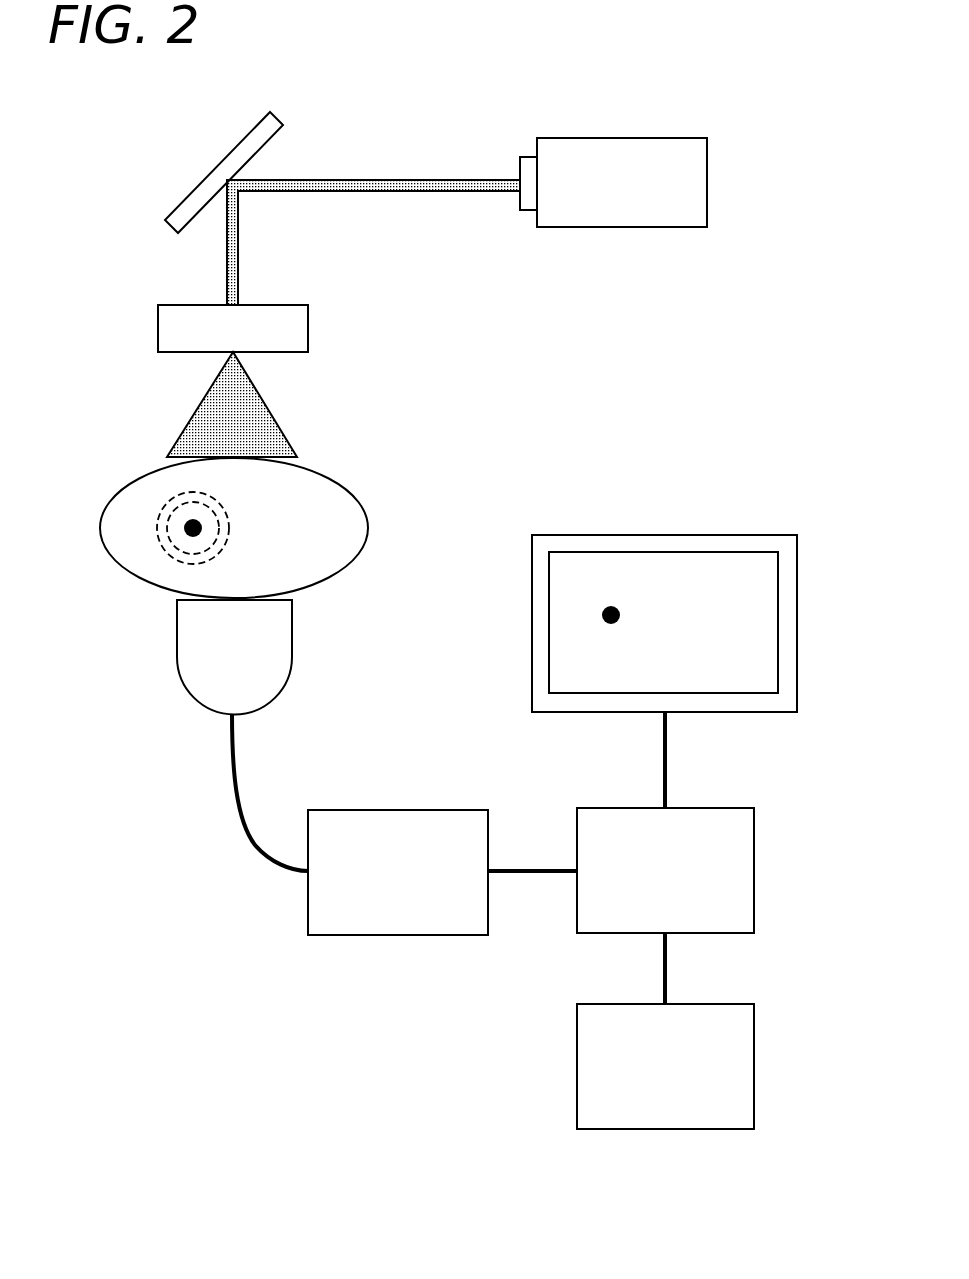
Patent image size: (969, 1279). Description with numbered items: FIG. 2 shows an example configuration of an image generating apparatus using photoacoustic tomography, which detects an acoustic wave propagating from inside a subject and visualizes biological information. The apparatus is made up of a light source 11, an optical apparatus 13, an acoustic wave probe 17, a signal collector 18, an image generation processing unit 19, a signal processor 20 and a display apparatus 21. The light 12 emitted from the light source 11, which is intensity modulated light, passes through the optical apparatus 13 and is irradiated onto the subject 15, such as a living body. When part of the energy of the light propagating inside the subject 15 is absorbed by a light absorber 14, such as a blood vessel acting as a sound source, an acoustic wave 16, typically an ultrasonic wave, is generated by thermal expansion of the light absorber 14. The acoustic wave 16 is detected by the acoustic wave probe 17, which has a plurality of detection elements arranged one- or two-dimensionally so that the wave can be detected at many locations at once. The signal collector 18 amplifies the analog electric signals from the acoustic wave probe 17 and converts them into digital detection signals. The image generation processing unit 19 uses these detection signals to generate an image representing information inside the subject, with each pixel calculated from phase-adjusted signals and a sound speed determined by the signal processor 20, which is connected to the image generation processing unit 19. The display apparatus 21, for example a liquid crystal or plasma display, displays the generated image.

The light source 11 is at (648, 168).
The light 12 is at (470, 177).
The optical apparatus 13 is at (143, 112).
The light absorber 14 is at (185, 520).
The subject 15 is at (322, 483).
The acoustic wave 16 is at (233, 492).
The acoustic wave probe 17 is at (182, 660).
The signal collector 18 is at (393, 828).
The image generation processing unit 19 is at (748, 888).
The signal processor 20 is at (740, 1095).
The display apparatus 21 is at (695, 577).